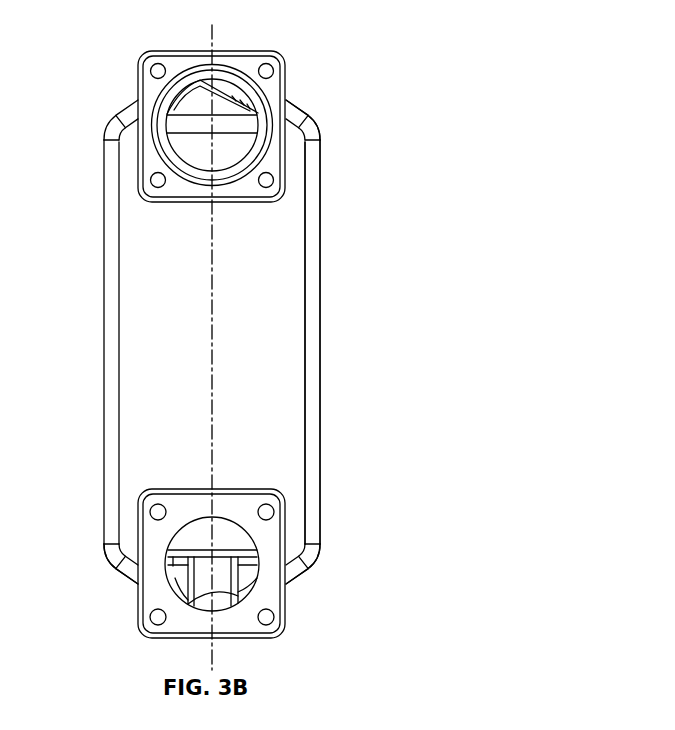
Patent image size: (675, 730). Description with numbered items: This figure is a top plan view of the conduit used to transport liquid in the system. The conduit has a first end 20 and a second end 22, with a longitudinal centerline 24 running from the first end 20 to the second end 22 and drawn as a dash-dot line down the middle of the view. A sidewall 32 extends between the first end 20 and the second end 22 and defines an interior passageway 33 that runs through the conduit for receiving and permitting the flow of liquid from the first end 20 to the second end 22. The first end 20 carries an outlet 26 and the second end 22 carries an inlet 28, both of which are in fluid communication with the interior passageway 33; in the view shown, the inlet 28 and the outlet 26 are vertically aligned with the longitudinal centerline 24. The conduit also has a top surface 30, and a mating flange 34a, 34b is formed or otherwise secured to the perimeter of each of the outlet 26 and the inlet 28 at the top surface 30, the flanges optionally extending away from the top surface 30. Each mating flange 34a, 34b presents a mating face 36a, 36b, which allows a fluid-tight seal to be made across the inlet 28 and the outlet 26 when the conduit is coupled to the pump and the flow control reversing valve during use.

The first end 20 is at (288, 580).
The second end 22 is at (285, 102).
The longitudinal centerline 24 is at (215, 322).
The outlet 26 is at (170, 556).
The inlet 28 is at (250, 93).
The top surface 30 is at (288, 283).
The sidewall 32 is at (320, 410).
The interior passageway 33 is at (200, 603).
The mating flange 34a is at (137, 605).
The mating flange 34b is at (287, 162).
The mating face 36a is at (247, 632).
The mating face 36b is at (150, 87).